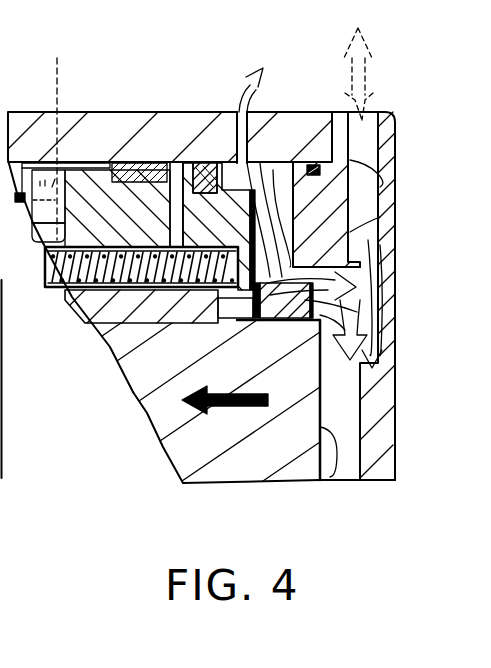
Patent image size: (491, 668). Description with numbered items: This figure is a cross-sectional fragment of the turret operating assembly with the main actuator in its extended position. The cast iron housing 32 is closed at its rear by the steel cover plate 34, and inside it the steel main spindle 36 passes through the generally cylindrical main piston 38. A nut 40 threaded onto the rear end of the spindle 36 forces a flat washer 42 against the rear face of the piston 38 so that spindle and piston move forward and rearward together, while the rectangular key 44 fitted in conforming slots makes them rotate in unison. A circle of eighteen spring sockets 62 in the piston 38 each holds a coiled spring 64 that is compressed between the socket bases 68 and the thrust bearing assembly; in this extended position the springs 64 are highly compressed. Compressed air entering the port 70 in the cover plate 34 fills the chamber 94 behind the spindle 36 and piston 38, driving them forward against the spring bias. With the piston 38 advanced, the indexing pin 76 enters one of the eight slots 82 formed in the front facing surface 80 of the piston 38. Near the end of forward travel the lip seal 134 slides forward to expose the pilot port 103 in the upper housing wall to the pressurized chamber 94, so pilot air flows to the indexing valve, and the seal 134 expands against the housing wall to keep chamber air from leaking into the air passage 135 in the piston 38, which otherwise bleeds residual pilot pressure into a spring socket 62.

The housing 32 is at (125, 123).
The cover plate 34 is at (340, 110).
The main spindle 36 is at (140, 385).
The main piston 38 is at (97, 163).
The nut 40 is at (0, 297).
The flat washer 42 is at (380, 218).
The key 44 is at (107, 343).
The spring sockets 62 is at (167, 300).
The coiled spring 64 is at (147, 300).
The socket bases 68 is at (222, 320).
The air inlet port 70 is at (378, 182).
The indexing pin 76 is at (60, 137).
The front facing surface 80 is at (43, 163).
The slots 82 is at (43, 245).
The chamber 94 is at (333, 480).
The pilot port 103 is at (227, 147).
The lip seal 134 is at (198, 167).
The air passage 135 is at (170, 160).